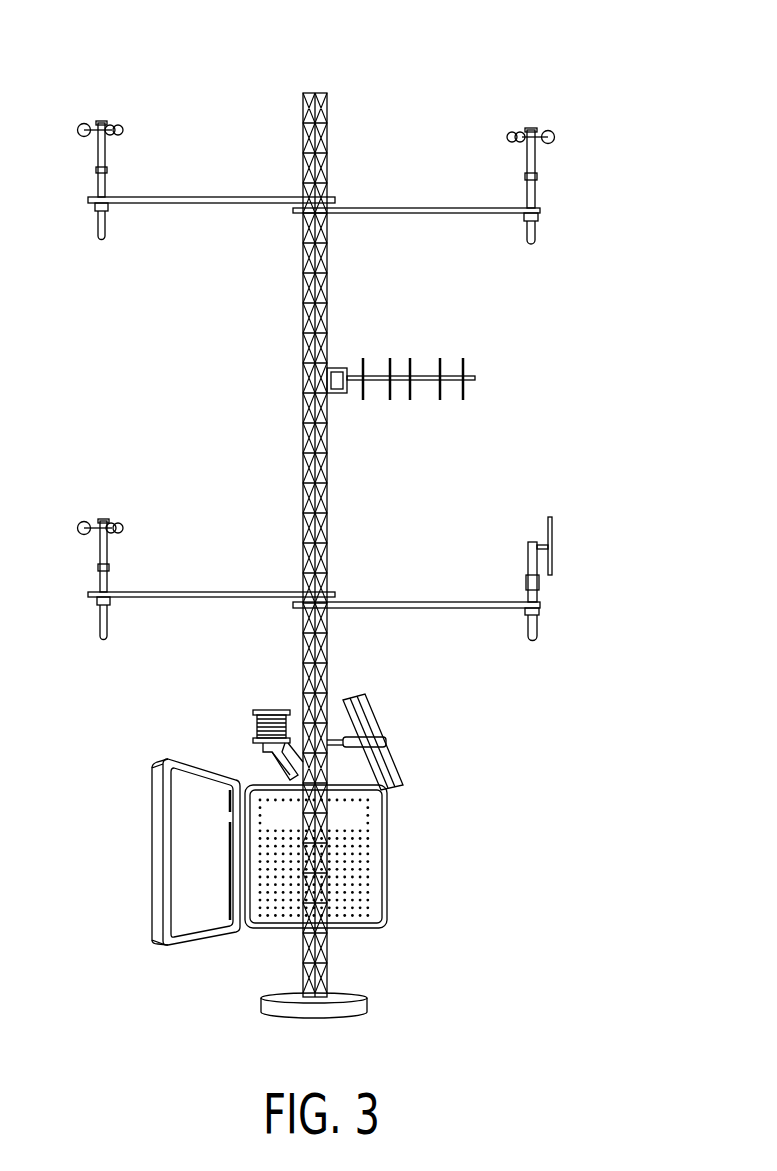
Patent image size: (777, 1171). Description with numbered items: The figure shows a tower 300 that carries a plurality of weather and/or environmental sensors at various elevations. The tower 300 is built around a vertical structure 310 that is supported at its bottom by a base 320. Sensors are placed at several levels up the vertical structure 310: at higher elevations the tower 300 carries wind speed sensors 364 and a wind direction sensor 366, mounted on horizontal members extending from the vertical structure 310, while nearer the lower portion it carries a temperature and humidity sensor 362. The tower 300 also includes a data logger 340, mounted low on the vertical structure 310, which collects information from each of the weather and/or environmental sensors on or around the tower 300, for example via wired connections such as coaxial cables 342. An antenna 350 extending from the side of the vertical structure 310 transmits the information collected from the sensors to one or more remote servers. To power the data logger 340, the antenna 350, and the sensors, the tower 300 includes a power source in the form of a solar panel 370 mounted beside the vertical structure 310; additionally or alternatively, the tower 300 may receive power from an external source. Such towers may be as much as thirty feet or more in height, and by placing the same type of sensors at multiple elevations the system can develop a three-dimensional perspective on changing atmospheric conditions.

The tower 300 is at (508, 46).
The vertical structure 310 is at (327, 102).
The base 320 is at (366, 1005).
The data logger 340 is at (387, 806).
The coaxial cables 342 is at (110, 204).
The antenna 350 is at (468, 396).
The temperature and humidity sensor 362 is at (252, 720).
The wind speed sensors 364 is at (97, 170).
The wind direction sensors 366 is at (537, 592).
The solar panel 370 is at (380, 730).